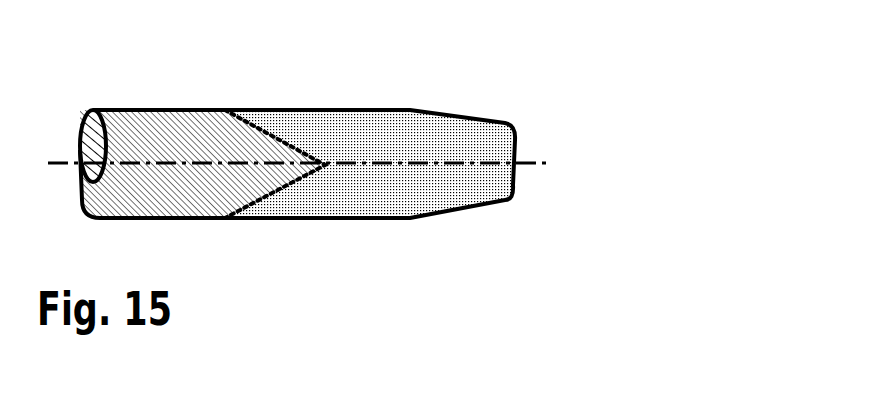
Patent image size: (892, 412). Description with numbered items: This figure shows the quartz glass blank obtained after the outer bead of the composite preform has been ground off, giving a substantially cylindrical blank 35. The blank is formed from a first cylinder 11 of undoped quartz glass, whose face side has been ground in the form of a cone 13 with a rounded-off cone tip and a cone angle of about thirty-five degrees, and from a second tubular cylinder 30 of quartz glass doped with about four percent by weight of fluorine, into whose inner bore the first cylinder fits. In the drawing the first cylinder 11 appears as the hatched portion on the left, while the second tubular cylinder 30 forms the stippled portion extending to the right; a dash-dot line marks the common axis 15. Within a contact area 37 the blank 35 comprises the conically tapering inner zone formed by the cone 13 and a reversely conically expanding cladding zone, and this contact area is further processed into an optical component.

The first cylinder 11 is at (145, 137).
The cone 13 is at (264, 185).
The longitudinal axis 15 is at (528, 163).
The second tubular cylinder 30 is at (352, 125).
The substantially cylindrical blank 35 is at (390, 255).
The contact area 37 is at (258, 110).